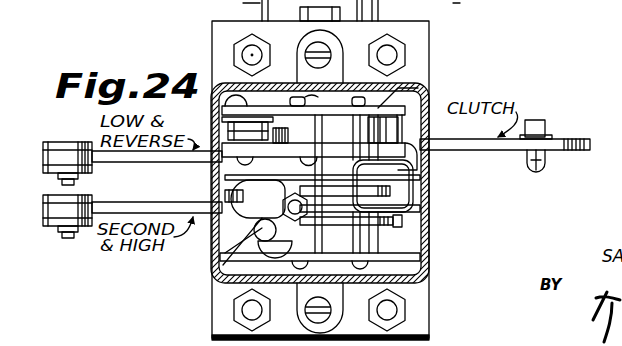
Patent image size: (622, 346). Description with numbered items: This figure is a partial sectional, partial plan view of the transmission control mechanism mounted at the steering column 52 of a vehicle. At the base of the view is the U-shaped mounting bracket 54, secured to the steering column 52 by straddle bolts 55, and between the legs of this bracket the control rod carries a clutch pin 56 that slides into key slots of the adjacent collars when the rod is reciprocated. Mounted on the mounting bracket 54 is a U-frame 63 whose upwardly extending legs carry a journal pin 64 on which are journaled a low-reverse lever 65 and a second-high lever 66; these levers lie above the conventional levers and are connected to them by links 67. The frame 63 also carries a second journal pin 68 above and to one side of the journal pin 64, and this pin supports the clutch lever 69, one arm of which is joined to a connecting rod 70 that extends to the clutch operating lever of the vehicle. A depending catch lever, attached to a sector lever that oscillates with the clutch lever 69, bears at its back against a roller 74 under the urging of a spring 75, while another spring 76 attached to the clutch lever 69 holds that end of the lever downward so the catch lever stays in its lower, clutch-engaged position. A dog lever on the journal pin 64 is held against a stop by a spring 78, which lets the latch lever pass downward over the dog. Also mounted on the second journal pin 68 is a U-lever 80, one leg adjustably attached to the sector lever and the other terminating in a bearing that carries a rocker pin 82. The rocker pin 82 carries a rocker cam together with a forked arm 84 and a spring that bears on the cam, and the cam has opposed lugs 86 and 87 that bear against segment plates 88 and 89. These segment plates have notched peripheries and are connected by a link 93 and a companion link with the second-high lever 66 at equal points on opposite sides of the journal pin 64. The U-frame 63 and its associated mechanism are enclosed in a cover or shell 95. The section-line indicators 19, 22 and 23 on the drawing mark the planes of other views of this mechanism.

The section line 19- 19 is at (28, 167).
The section line 22- 22 is at (205, 247).
The section line 23- 23 is at (210, 174).
The steering column 52 is at (239, 5).
The U-shaped mounting bracket 54 is at (421, 334).
The straddle bolts 55 is at (387, 55).
The clutch pin 56 is at (445, 4).
The U-frame 63 is at (426, 92).
The journal pin 64 is at (290, 85).
The low-reverse lever 65 is at (98, 158).
The second-high lever 66 is at (205, 214).
The links 67 is at (55, 173).
The second journal pin 68 is at (355, 85).
The clutch lever 69 is at (469, 141).
The connecting rod 70 is at (548, 160).
The roller 74 is at (214, 119).
The spring 75 is at (277, 100).
The spring 76 is at (324, 100).
The spring 78 is at (325, 105).
The U-lever 80 is at (428, 207).
The rocker pin 82 is at (320, 192).
The forked arm 84 is at (258, 222).
The lug 86 is at (260, 238).
The lug 87 is at (212, 180).
The segment plate 88 is at (428, 230).
The segment plate 89 is at (429, 162).
The link 93 is at (211, 275).
The cover or shell 95 is at (431, 101).